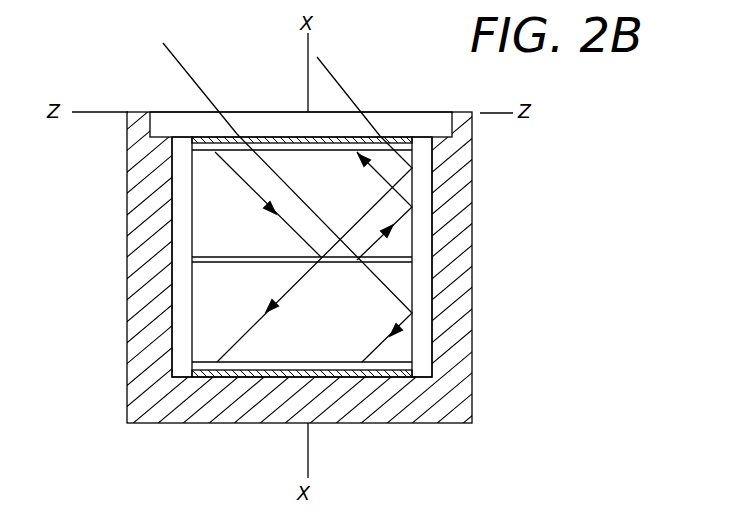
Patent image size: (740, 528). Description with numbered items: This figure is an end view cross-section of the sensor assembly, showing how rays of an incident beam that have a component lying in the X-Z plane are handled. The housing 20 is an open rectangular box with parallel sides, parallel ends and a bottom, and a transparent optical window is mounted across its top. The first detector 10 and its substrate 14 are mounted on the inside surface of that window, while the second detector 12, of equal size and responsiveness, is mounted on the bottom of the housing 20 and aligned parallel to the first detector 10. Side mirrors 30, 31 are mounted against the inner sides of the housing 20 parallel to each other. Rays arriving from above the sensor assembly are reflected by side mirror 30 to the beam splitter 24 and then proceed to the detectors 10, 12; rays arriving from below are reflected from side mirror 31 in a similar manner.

The first detector 10 is at (203, 150).
The second detector 12 is at (298, 333).
The substrate 14 is at (270, 138).
The housing 20 is at (458, 390).
The beam splitter 24 is at (242, 257).
The side mirror 30 is at (420, 283).
The side mirror 31 is at (185, 291).